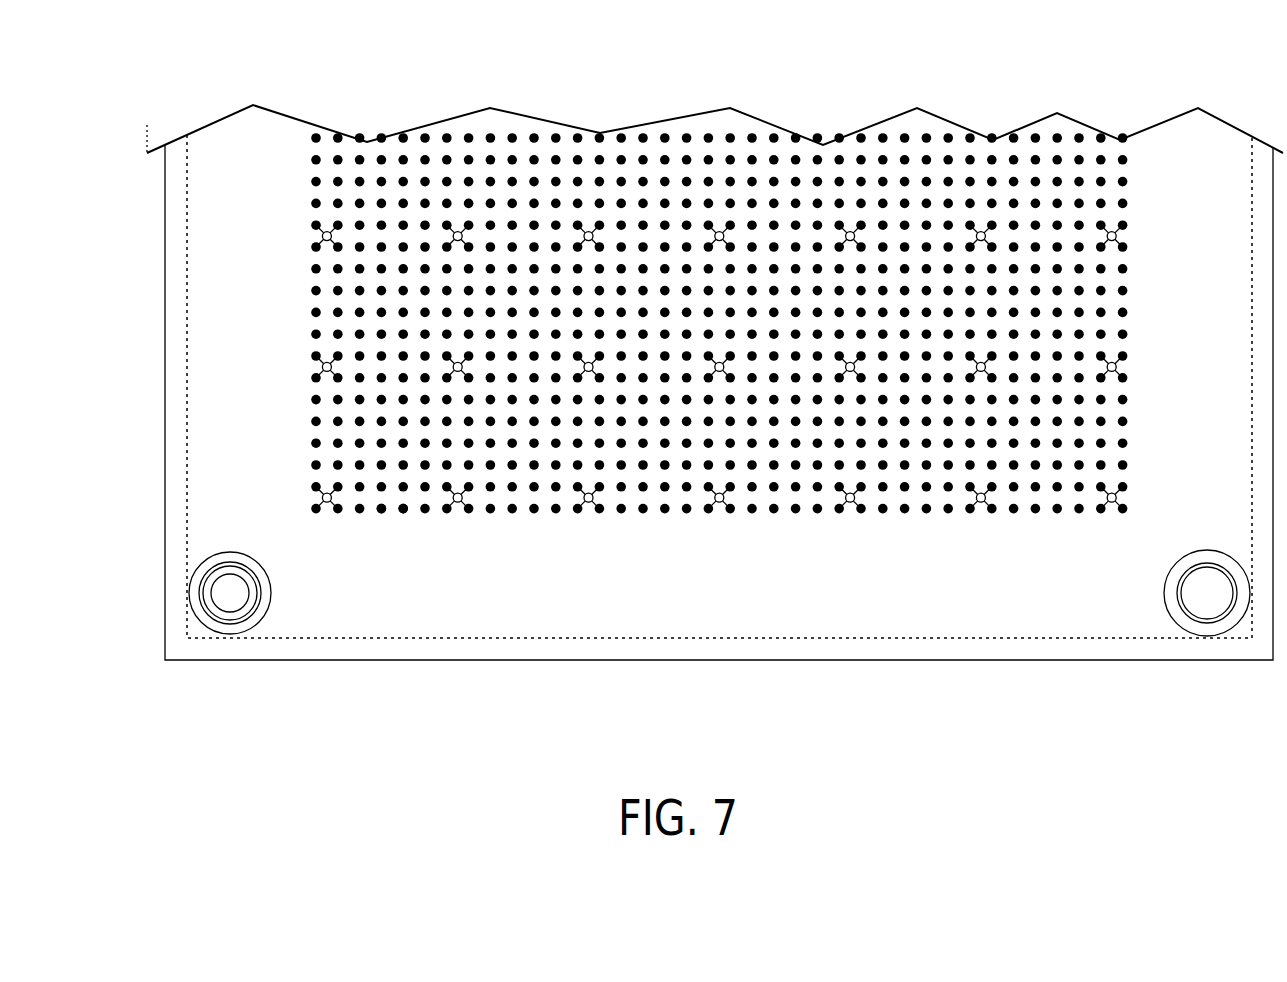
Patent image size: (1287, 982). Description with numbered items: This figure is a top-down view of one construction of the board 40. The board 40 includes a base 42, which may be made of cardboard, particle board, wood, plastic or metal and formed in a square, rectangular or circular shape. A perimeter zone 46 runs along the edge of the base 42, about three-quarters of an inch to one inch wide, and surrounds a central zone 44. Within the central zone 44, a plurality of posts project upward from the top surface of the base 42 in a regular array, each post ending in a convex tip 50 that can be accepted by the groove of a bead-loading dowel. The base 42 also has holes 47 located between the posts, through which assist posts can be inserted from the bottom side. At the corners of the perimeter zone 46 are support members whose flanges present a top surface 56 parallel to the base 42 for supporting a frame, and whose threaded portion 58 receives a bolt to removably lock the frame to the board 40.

The board 40 is at (825, 115).
The base 42 is at (673, 599).
The central zone 44 is at (785, 518).
The perimeter zone 46 is at (270, 627).
The holes 47 is at (327, 509).
The convex tip 50 is at (403, 514).
The top surface of flange 56 is at (265, 595).
The threaded portion 58 is at (245, 560).